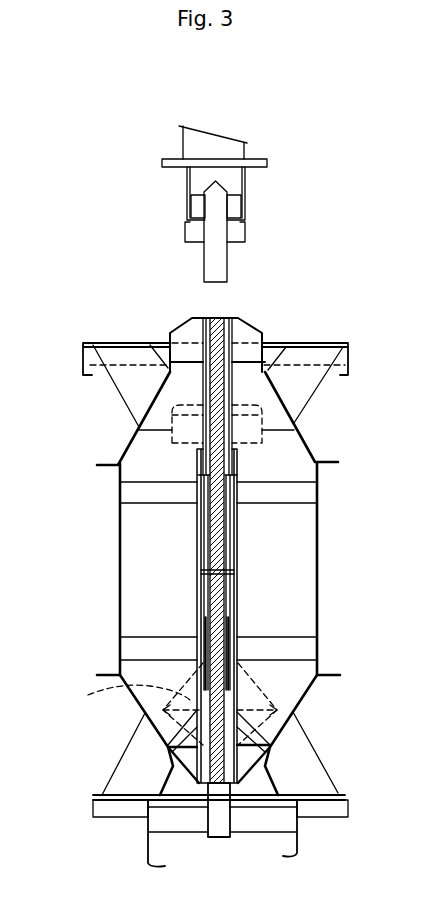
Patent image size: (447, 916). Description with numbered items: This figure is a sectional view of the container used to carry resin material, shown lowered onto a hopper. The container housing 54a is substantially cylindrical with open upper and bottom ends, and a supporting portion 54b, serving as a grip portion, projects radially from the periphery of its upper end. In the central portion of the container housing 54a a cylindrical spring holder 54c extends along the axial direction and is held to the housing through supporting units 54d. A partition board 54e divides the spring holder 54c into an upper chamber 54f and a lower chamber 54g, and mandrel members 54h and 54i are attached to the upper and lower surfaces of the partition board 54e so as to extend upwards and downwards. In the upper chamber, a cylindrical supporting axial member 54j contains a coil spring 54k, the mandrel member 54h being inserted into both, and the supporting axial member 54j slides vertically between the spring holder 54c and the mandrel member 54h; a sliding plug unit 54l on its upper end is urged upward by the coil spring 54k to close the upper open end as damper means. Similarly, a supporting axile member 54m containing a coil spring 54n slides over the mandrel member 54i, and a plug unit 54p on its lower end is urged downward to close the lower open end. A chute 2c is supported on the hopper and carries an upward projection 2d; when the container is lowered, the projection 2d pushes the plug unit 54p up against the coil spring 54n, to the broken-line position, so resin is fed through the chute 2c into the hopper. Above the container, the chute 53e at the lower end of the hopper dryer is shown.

The chute 53e is at (187, 213).
The container housing 54a is at (312, 443).
The supporting portion 54b is at (83, 347).
The spring holder 54c is at (237, 525).
The supporting units 54d is at (167, 498).
The partition board 54e is at (205, 568).
The upper chamber 54f is at (237, 492).
The lower chamber 54g is at (205, 600).
The mandrel member 54h is at (224, 545).
The mandrel member 54i is at (230, 607).
The supporting axial member 54j is at (235, 386).
The coil spring 54k is at (205, 386).
The sliding plug unit 54l is at (238, 318).
The supporting axile member 54m is at (240, 698).
The coil spring 54n is at (240, 738).
The plug unit 54p is at (175, 768).
The chute 2c is at (113, 815).
The projection 2d is at (233, 823).